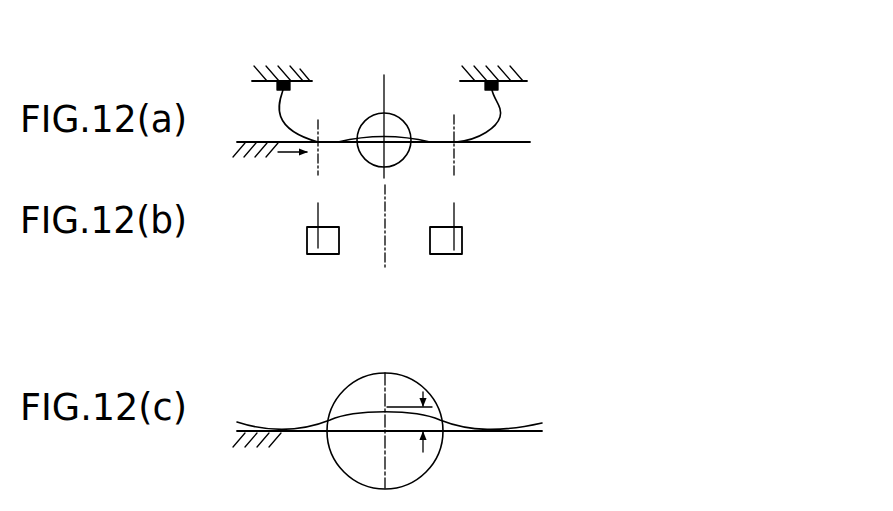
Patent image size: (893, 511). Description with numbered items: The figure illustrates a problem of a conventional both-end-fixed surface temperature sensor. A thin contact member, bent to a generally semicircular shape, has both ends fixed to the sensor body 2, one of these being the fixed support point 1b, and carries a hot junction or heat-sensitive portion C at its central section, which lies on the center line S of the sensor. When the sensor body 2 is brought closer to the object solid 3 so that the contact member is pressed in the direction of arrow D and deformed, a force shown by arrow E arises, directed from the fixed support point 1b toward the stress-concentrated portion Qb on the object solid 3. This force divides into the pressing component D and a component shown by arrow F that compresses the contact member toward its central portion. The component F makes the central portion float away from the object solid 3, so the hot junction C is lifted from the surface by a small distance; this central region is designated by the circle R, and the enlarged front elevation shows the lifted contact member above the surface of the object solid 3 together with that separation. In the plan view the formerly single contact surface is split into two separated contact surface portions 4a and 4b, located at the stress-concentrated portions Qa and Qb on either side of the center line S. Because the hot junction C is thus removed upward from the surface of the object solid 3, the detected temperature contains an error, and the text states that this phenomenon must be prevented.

In FIG. 12A, the body 2 is at (288, 72).
In FIG. 12A, the end of contact member 1b is at (498, 85).
In FIG. 12A, the object solid 3 is at (526, 142).
In FIG. 12C, the object solid 3 is at (518, 433).
In FIG. 12B, the contact surface portion 4a is at (330, 228).
In FIG. 12B, the contact surface portion 4b is at (462, 232).
In FIG. 12A, the circle R is at (407, 122).
In FIG. 12C, the circle R is at (412, 378).
In FIG. 12A, the center line S is at (388, 93).
In FIG. 12A, the hot junction C is at (384, 139).
In FIG. 12A, the arrow E is at (482, 103).
In FIG. 12A, the arrow D is at (493, 110).
In FIG. 12A, the arrow F is at (493, 152).
In FIG. 12B, the stress-concentrated portion Qa is at (318, 248).
In FIG. 12B, the stress-concentrated portion Qb is at (454, 238).